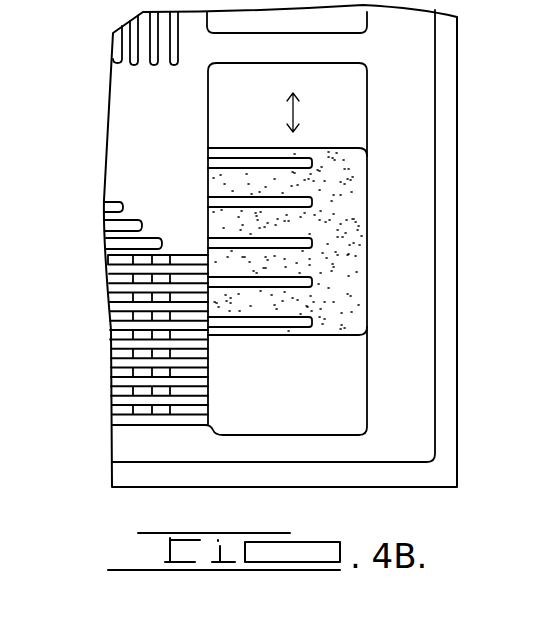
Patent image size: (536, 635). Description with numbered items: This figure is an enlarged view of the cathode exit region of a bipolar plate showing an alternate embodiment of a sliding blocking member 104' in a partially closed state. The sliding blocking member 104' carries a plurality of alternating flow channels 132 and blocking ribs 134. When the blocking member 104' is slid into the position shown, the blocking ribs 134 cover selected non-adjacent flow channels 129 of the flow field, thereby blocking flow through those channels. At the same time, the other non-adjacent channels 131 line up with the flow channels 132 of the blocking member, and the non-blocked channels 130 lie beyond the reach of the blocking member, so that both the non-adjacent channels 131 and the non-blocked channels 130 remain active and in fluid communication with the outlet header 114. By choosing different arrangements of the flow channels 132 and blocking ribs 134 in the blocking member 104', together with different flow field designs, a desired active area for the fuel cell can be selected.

The sliding blocking member 104' is at (318, 206).
The outlet header 114 is at (325, 412).
The non-adjacent flow channels 129 is at (148, 263).
The non-blocked channels 130 is at (205, 342).
The non-adjacent channels 131 is at (183, 321).
The flow channels 132 is at (250, 205).
The blocking ribs 134 is at (228, 227).